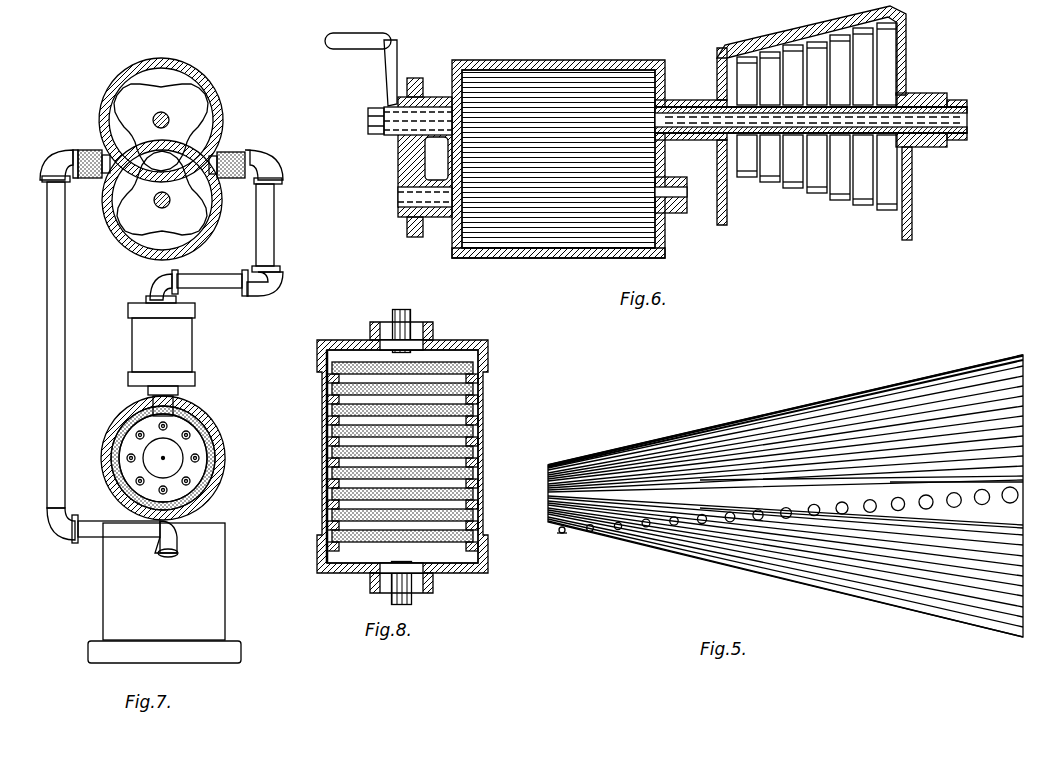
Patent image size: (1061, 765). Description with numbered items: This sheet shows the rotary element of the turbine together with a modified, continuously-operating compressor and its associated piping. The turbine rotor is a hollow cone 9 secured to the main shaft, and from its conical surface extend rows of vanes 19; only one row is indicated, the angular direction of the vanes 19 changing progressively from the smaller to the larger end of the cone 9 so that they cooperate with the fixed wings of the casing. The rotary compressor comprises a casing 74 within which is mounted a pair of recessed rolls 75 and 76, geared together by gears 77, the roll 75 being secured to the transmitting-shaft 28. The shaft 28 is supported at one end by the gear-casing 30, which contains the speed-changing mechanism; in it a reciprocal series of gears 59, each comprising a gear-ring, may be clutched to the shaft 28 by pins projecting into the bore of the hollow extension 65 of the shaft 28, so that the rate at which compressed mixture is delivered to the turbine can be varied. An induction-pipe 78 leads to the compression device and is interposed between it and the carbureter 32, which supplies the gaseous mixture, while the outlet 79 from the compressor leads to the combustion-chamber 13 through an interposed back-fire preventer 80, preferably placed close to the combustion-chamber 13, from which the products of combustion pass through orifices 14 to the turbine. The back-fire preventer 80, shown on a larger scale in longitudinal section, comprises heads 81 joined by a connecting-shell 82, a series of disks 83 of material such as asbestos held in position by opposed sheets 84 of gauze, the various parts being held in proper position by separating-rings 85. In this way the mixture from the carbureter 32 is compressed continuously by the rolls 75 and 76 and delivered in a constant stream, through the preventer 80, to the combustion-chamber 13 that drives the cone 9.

In FIG. 5, the cone 9 is at (785, 496).
In FIG. 7, the combustion-chamber 13 is at (210, 446).
In FIG. 7, the orifices 14 is at (192, 466).
In FIG. 5, the vanes 19 is at (600, 535).
In FIG. 7, the transmitting-shaft 28 is at (153, 117).
In FIG. 6, the transmitting-shaft 28 is at (682, 110).
In FIG. 6, the gear-casing 30 is at (722, 218).
In FIG. 7, the carbureter 32 is at (220, 588).
In FIG. 6, the reciprocal series of gears 59 is at (836, 200).
In FIG. 6, the hollow extension 65 is at (940, 140).
In FIG. 7, the casing 74 is at (225, 128).
In FIG. 6, the casing 74 is at (582, 68).
In FIG. 7, the recessed roll 75 is at (166, 93).
In FIG. 6, the recessed roll 75 is at (493, 80).
In FIG. 7, the recessed roll 76 is at (190, 220).
In FIG. 6, the recessed roll 76 is at (555, 260).
In FIG. 6, the gears 77 is at (405, 175).
In FIG. 7, the induction-pipe 78 is at (58, 315).
In FIG. 7, the outlet 79 is at (276, 258).
In FIG. 7, the back-fire preventer 80 is at (186, 366).
In FIG. 8, the back-fire preventer 80 is at (328, 404).
In FIG. 8, the heads 81 is at (428, 334).
In FIG. 8, the connecting-shell 82 is at (322, 488).
In FIG. 8, the disks 83 is at (348, 362).
In FIG. 8, the sheets of gauze 84 is at (480, 400).
In FIG. 8, the separating-rings 85 is at (480, 504).